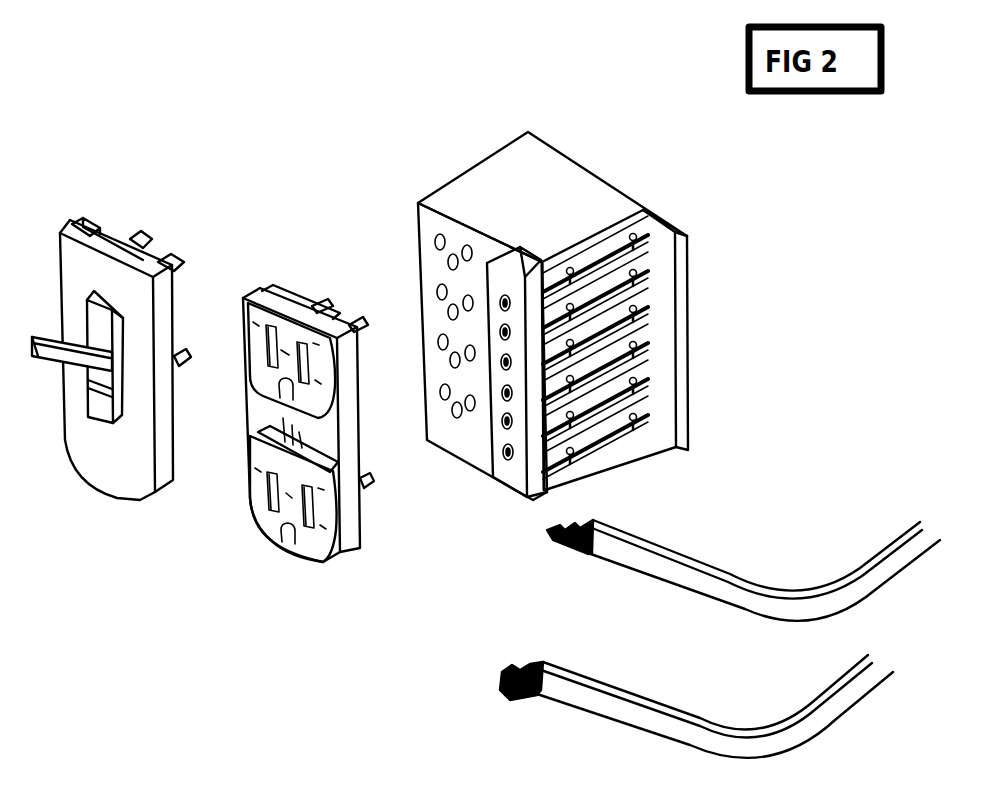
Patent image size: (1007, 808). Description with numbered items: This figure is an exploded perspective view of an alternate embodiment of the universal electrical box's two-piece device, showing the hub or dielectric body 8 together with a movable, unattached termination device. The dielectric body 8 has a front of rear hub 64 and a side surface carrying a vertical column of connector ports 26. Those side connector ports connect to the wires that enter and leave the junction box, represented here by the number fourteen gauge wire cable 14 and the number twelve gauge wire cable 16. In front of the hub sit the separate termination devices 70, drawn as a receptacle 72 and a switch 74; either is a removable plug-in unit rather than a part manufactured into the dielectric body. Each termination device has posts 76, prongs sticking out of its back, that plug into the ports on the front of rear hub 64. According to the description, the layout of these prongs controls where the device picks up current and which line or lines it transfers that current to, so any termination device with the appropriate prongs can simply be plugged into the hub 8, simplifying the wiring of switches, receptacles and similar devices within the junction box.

The dielectric body or hub 8 is at (571, 310).
The vertical column of connector ports 26 is at (596, 252).
The front of rear hub 64 is at (468, 438).
The separate termination devices 70 is at (280, 292).
The receptacle 72 is at (268, 537).
The switch 74 is at (96, 478).
The posts that plug into the ports on the front of the rear hub 76 is at (366, 480).
The #14 wire cable 14 is at (672, 551).
The #12 wire cable 16 is at (616, 688).